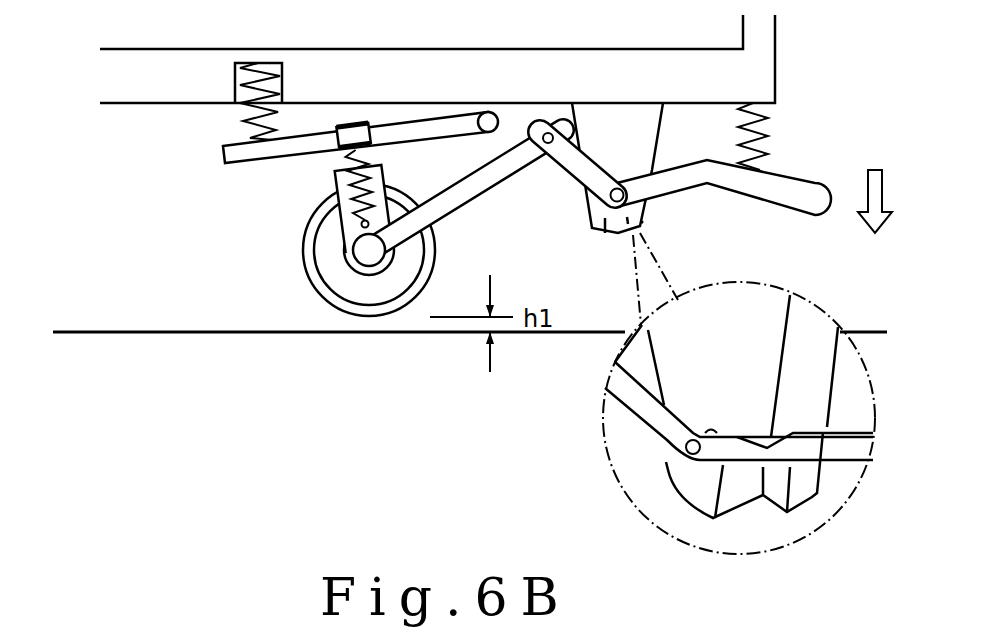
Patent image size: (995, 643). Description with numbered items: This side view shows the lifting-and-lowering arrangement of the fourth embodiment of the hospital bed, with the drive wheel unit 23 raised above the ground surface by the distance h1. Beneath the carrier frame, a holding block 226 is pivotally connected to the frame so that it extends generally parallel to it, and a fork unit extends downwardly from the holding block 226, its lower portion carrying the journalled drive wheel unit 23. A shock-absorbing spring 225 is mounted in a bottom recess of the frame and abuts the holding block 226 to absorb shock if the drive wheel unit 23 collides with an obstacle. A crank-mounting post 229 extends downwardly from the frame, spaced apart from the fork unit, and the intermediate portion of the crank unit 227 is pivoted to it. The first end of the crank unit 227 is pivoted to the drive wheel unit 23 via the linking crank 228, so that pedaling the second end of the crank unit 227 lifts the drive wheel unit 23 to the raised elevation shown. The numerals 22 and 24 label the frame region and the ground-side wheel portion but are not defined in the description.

The frame / body 22 is at (199, 111).
The shock-absorbing spring 225 is at (253, 72).
The holding block 226 is at (222, 153).
The drive wheel unit 23 is at (305, 250).
The ground surface / tire 24 is at (360, 285).
The crank unit 227 is at (828, 190).
The linking crank 228 is at (464, 196).
The crank-mounting post 229 is at (605, 226).